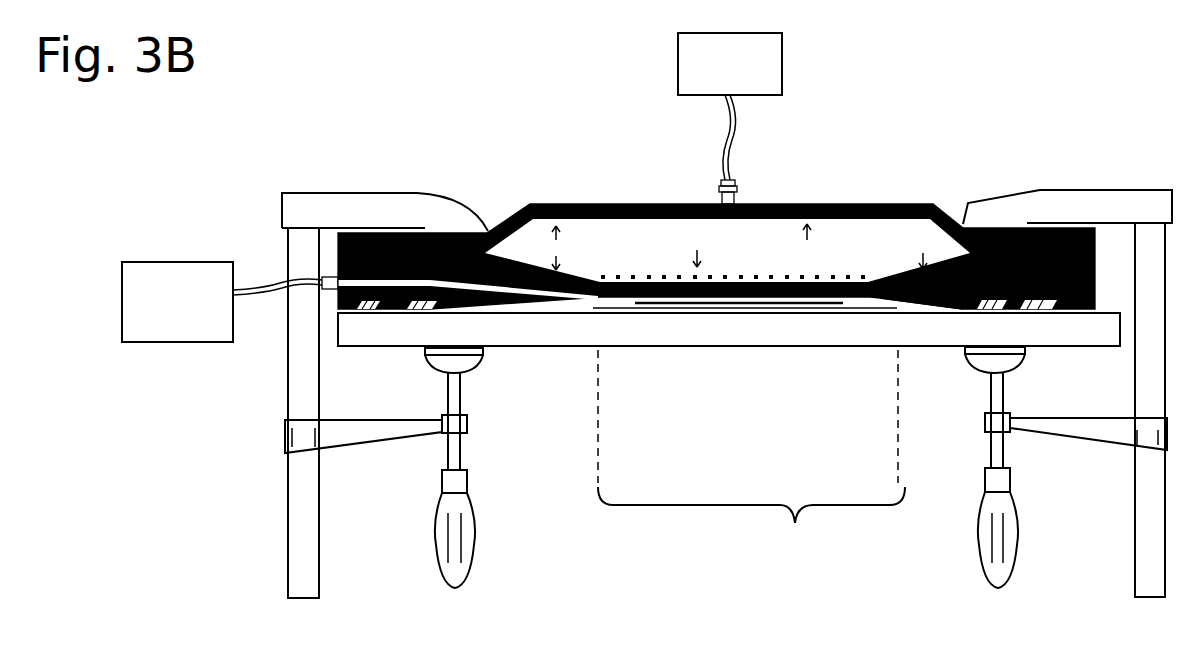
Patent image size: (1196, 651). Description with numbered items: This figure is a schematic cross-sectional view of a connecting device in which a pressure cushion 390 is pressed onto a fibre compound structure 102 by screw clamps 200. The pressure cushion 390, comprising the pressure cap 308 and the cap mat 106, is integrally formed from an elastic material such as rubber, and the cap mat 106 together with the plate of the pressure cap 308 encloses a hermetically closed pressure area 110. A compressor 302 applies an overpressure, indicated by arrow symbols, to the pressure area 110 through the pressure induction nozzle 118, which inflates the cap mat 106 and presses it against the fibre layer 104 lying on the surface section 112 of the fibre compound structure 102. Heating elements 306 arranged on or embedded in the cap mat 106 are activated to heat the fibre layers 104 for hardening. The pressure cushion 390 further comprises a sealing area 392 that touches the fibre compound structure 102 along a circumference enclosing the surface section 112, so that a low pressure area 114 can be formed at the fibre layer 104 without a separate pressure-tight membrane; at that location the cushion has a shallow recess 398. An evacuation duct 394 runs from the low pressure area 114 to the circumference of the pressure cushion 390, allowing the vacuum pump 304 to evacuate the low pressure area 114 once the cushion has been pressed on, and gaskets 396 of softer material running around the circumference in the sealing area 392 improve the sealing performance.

The fibre compound structure 102 is at (737, 333).
The fibre layer 104 is at (813, 300).
The cap mat 106 is at (870, 313).
The pressure area 110 is at (770, 258).
The surface section 112 is at (751, 459).
The low pressure area 114 is at (622, 300).
The valve nozzle 118 is at (740, 186).
The screw clamps 200 is at (473, 548).
The compressor 302 is at (750, 82).
The vacuum pump 304 is at (197, 314).
The heating element 306 is at (833, 276).
The cap plate 308 is at (857, 204).
The pressure cushion 390 is at (597, 172).
The sealing area 392 is at (467, 322).
The evacuation duct 394 is at (457, 228).
The gasket 396 is at (417, 315).
The recess 398 is at (902, 307).